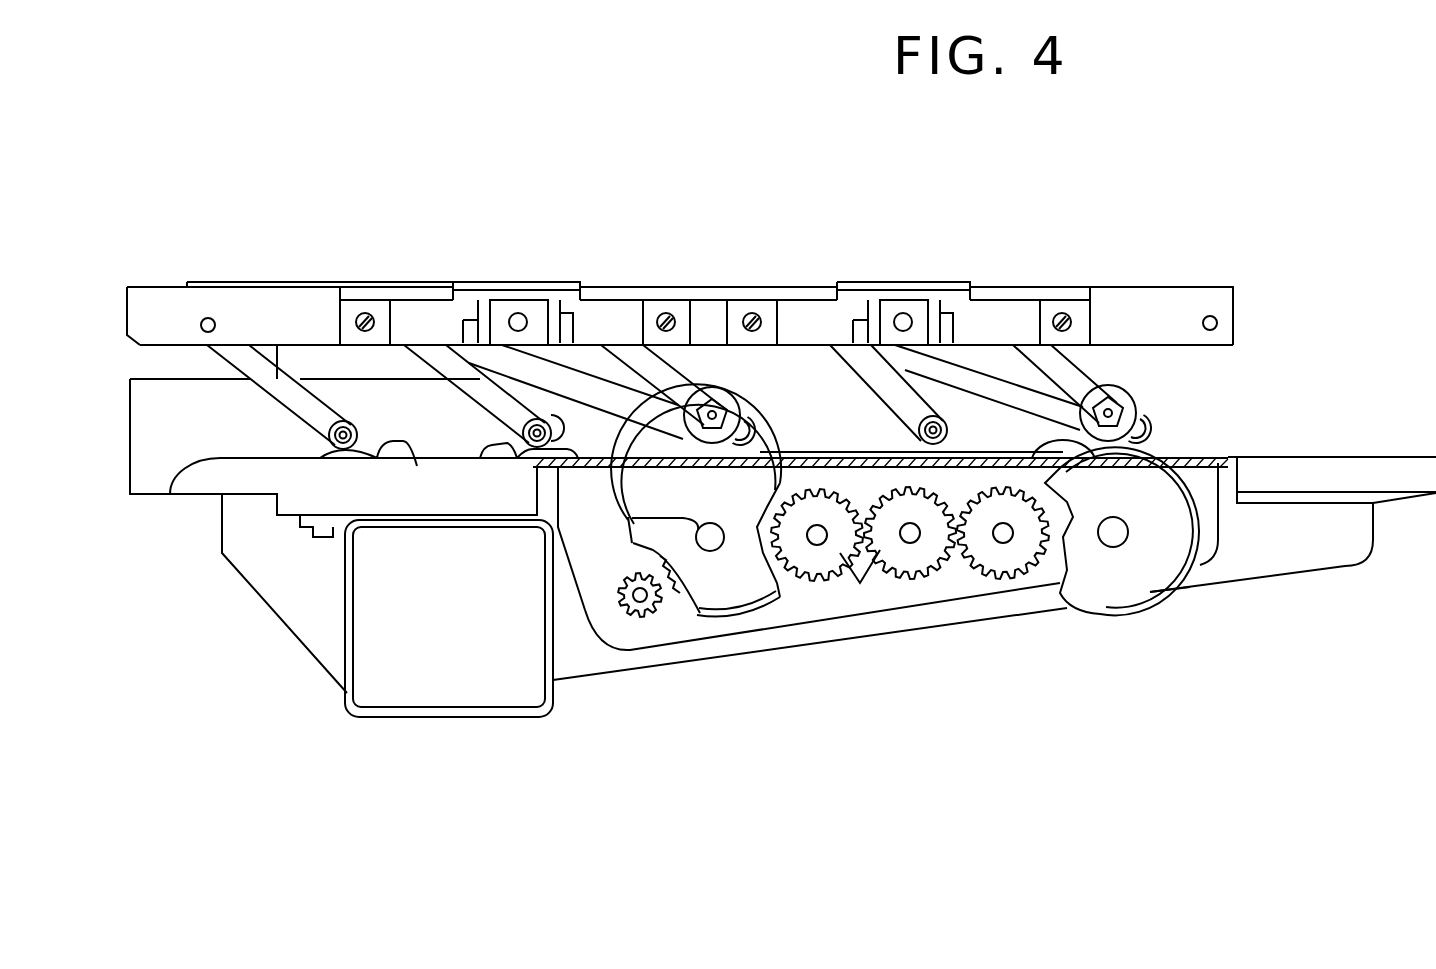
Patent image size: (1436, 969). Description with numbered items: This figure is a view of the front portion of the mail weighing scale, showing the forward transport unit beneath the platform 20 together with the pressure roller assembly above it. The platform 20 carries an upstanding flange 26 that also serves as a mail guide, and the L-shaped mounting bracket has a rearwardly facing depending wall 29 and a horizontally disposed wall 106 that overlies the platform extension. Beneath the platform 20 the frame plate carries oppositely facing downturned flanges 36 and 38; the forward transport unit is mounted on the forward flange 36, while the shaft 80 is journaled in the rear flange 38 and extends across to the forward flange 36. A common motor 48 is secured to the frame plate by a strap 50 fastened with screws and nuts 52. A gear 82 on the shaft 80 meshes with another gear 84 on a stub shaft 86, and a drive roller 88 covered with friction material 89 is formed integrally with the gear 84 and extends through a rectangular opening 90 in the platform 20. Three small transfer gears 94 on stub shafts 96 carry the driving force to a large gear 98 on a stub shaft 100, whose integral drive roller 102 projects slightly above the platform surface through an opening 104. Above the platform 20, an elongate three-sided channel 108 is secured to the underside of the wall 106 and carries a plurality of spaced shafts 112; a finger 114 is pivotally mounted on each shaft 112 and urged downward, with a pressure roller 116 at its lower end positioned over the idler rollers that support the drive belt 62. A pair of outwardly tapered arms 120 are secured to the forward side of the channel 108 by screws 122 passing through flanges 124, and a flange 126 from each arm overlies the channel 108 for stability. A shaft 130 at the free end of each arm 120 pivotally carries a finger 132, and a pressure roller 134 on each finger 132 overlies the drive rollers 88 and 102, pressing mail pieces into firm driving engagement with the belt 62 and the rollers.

The platform 20 is at (1335, 456).
The upstanding flange 26 is at (143, 470).
The depending wall 29 is at (315, 352).
The forward downturned flange 36 is at (1219, 527).
The rear downturned flange 38 is at (1333, 560).
The motor 48 is at (370, 600).
The strap 50 is at (343, 657).
The screws and nuts 52 is at (312, 538).
The drive belt 62 is at (497, 457).
The shaft 80 is at (638, 603).
The gear 82 is at (622, 605).
The gear 84 is at (707, 617).
The stub shaft 86 is at (632, 522).
The drive roller 88 is at (757, 590).
The friction material 89 is at (745, 590).
The rectangular opening 90 is at (664, 458).
The transfer gears 94 is at (920, 575).
The stub shafts 96 is at (860, 585).
The large gear 98 is at (1073, 540).
The stub shaft 100 is at (1122, 548).
The drive roller 102 is at (1163, 582).
The opening 104 is at (1175, 450).
The horizontally disposed wall 106 is at (265, 287).
The three-sided channel 108 is at (1200, 290).
The shafts 112 is at (208, 318).
The finger 114 is at (292, 410).
The pressure roller 116 is at (377, 402).
The arms 120 is at (603, 300).
The screws 122 is at (362, 313).
The flanges 124 is at (378, 300).
The flange 126 is at (523, 282).
The shaft 130 is at (510, 313).
The finger 132 is at (593, 385).
The pressure roller 134 is at (738, 405).